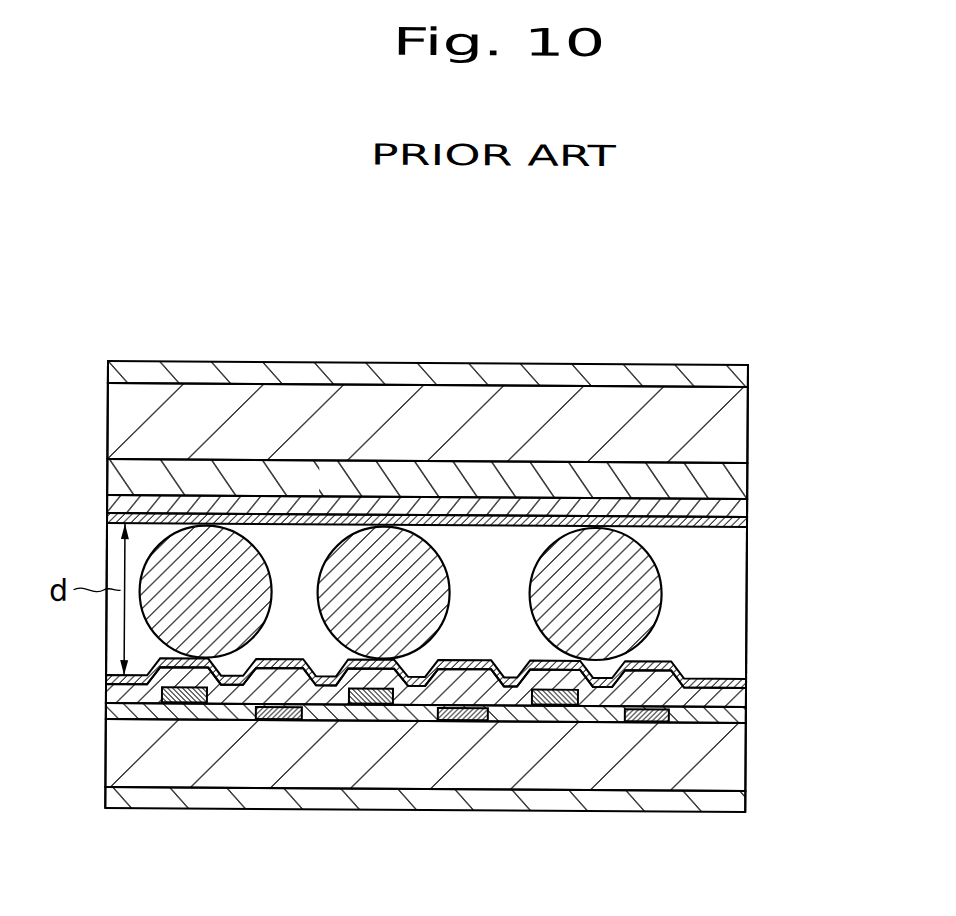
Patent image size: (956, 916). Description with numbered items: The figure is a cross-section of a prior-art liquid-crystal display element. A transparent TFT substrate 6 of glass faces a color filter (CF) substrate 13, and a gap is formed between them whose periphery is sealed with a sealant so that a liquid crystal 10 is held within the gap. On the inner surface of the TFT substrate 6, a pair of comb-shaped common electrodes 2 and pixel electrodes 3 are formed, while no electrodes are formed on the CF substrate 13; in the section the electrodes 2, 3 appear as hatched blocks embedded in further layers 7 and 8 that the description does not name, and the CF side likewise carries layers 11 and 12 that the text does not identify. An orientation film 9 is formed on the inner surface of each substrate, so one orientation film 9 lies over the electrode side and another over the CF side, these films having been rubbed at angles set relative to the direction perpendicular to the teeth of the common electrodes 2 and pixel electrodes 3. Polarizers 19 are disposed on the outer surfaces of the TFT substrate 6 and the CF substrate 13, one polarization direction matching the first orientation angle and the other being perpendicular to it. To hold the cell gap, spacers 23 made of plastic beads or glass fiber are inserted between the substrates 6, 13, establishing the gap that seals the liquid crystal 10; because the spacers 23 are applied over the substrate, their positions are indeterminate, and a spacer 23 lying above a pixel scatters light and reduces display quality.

The common electrodes 2 is at (280, 719).
The pixel electrodes 3 is at (361, 706).
The TFT substrate 6 is at (733, 758).
The insulating layer 7 is at (737, 710).
The insulating film 8 is at (735, 689).
The orientation film 9 is at (728, 519).
The liquid crystal 10 is at (728, 607).
The transparent electrode 11 is at (728, 508).
The color filter 12 is at (728, 480).
The CF substrate 13 is at (728, 425).
The polarizers 19 is at (750, 370).
The spacer 23 is at (660, 567).